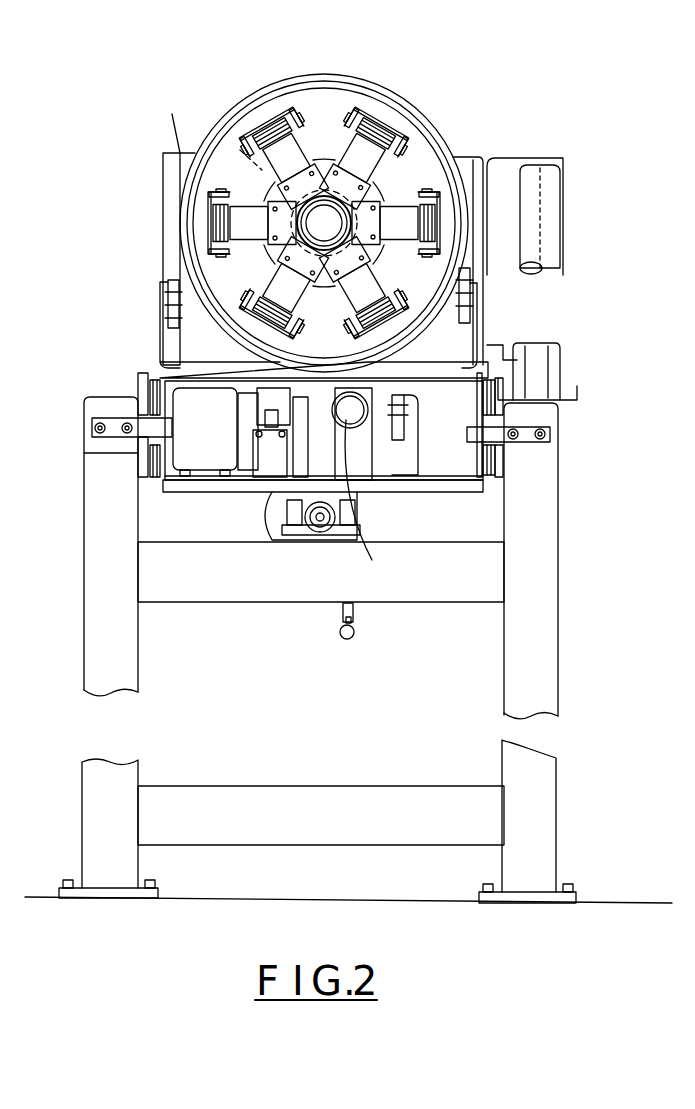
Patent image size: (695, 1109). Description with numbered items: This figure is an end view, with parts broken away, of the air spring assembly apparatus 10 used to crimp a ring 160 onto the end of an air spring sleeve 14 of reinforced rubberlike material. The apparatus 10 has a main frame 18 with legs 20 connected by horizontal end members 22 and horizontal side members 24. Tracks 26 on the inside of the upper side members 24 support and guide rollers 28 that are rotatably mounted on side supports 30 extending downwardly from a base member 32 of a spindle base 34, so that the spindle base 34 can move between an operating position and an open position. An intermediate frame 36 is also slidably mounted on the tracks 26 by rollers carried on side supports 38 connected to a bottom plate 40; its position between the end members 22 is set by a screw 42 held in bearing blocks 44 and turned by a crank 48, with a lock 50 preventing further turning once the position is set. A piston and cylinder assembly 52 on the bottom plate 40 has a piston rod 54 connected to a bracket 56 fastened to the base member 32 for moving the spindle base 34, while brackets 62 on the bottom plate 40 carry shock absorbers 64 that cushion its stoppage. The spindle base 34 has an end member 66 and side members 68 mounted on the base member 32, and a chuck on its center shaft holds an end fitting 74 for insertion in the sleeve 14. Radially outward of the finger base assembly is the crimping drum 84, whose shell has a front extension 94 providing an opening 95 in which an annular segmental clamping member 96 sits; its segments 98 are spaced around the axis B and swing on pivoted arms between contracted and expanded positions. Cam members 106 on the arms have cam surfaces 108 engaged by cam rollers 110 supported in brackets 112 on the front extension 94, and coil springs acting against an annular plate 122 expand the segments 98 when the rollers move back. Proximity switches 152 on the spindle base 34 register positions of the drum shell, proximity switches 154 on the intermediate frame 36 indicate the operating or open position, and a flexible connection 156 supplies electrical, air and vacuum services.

The air spring assembly apparatus 10 is at (528, 118).
The air spring sleeve 14 is at (255, 143).
The main frame 18 is at (545, 485).
The legs 20 is at (92, 825).
The horizontal end members 22 is at (435, 562).
The horizontal side members 24 is at (95, 430).
The tracks 26 is at (148, 418).
The rollers 28 is at (152, 392).
The side supports 30 is at (560, 378).
The base member 32 is at (540, 352).
The spindle base 34 is at (490, 352).
The intermediate frame 36 is at (400, 490).
The side supports 38 is at (190, 490).
The bottom plate 40 is at (268, 498).
The screw 42 is at (320, 522).
The bearing blocks 44 is at (293, 528).
The crank 48 is at (262, 530).
The lock 50 is at (355, 615).
The piston and cylinder assembly 52 is at (258, 432).
The piston rod 54 is at (265, 422).
The bracket 56 is at (257, 396).
The brackets 62 is at (360, 425).
The shock absorbers 64 is at (368, 501).
The end member 66 is at (176, 158).
The side members 68 is at (170, 178).
The end fitting 74 is at (458, 155).
The crimping drum 84 is at (385, 90).
The front extension 94 is at (334, 75).
The opening 95 is at (412, 150).
The annular segmental clamping member 96 is at (308, 72).
The segments 98 is at (318, 162).
The cam members 106 is at (300, 140).
The cam surfaces 108 is at (268, 105).
The cam rollers 110 is at (283, 100).
The brackets 112 is at (250, 110).
The annular plate 122 is at (430, 145).
The proximity switches 152 is at (173, 300).
The proximity switches 154 is at (410, 407).
The flexible connection 156 is at (563, 388).
The ring 160 is at (162, 123).
The axis B- B is at (258, 195).